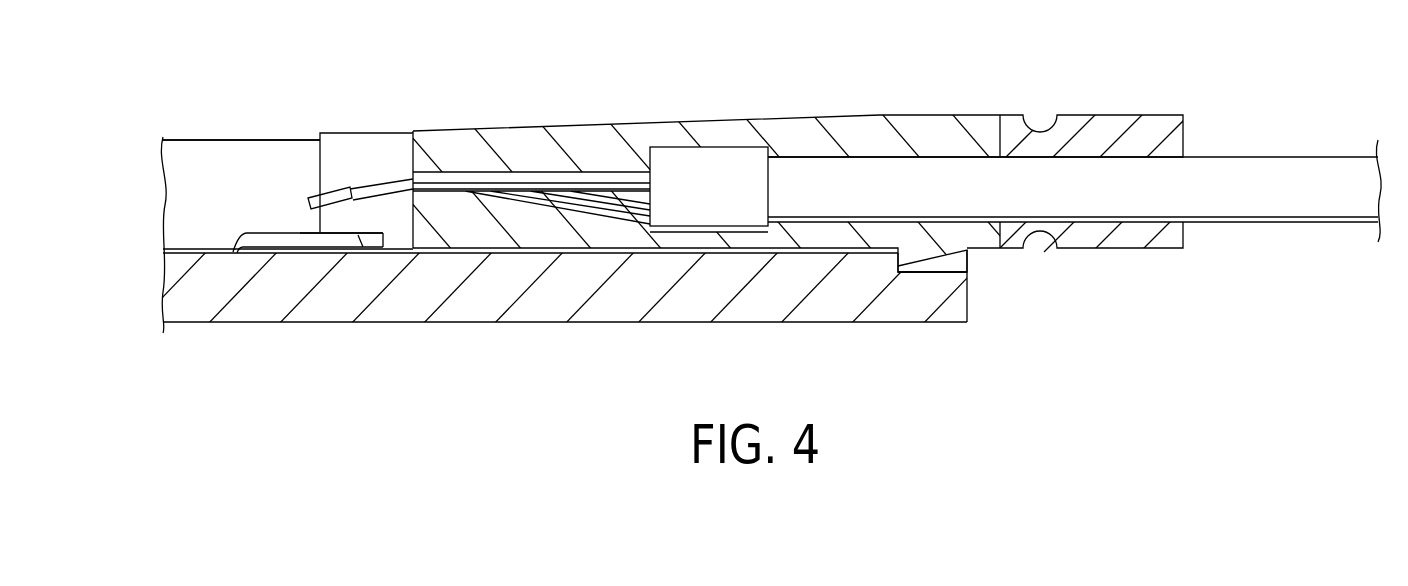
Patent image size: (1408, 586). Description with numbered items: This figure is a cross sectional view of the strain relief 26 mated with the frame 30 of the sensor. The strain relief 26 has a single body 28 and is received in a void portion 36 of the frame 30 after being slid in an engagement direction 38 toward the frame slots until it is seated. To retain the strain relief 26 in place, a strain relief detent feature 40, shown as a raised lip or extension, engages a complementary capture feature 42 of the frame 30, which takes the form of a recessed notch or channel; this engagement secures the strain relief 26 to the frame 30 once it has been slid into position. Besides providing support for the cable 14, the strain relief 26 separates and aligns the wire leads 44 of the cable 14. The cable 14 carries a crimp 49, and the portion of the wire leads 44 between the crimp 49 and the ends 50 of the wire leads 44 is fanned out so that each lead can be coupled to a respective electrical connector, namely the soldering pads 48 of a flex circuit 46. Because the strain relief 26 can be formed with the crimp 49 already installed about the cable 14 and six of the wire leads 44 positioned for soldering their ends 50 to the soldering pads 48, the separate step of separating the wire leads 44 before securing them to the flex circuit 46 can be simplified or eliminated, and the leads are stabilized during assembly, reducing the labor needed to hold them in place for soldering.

The cable 14 is at (1283, 166).
The strain relief 26 is at (787, 149).
The body 28 is at (939, 100).
The frame 30 is at (542, 299).
The void portion 36 is at (242, 160).
The engagement direction 38 is at (203, 192).
The strain relief detent feature 40 is at (967, 266).
The complementary capture feature 42 is at (927, 277).
The wire leads 44 is at (473, 180).
The flex circuit 46 is at (218, 237).
The soldering pads 48 is at (293, 232).
The crimp 49 is at (730, 160).
The ends 50 is at (330, 193).